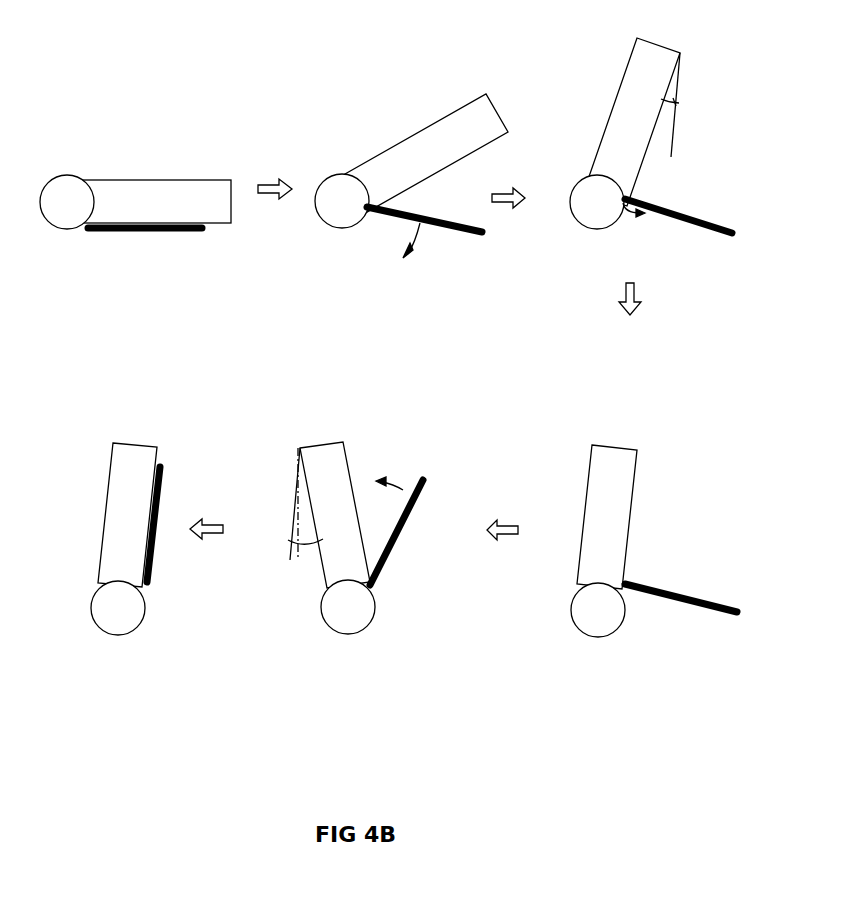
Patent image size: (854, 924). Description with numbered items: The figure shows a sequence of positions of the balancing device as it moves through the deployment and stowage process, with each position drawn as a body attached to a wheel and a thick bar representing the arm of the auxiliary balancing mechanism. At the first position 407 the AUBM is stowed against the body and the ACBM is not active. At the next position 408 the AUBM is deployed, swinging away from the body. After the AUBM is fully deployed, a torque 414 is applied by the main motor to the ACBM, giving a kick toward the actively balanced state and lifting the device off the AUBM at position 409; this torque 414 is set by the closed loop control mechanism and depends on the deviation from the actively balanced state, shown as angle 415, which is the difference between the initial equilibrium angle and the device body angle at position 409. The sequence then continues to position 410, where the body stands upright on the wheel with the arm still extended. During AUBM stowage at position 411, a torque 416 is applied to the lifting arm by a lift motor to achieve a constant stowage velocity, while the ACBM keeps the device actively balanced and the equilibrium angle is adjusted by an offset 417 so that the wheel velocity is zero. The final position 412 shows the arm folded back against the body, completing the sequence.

The position 407 is at (135, 125).
The position 408 is at (411, 139).
The position 409 is at (658, 126).
The position 410 is at (654, 583).
The position 411 is at (343, 581).
The position 412 is at (125, 582).
The torque 414 is at (642, 195).
The angle 415 is at (679, 103).
The torque 416 is at (403, 490).
The offset 417 is at (297, 540).